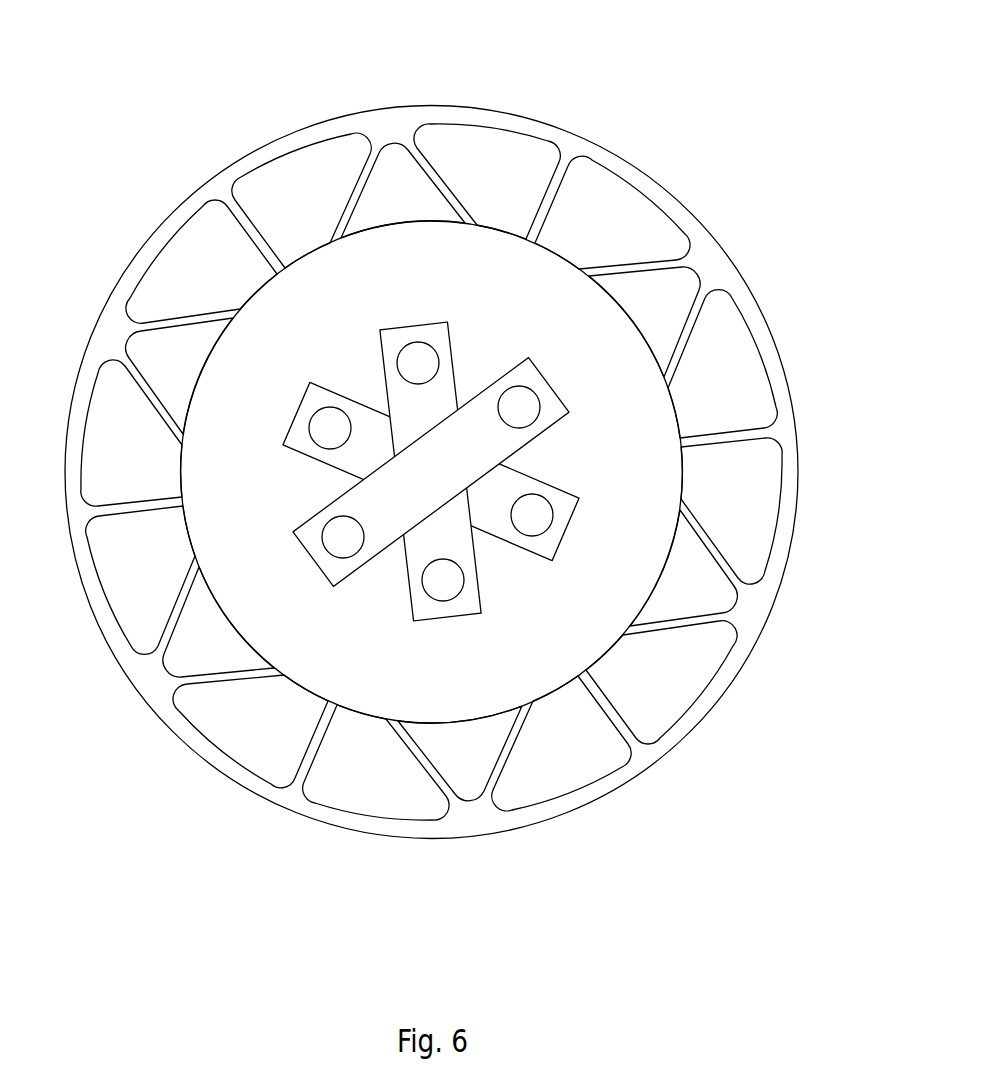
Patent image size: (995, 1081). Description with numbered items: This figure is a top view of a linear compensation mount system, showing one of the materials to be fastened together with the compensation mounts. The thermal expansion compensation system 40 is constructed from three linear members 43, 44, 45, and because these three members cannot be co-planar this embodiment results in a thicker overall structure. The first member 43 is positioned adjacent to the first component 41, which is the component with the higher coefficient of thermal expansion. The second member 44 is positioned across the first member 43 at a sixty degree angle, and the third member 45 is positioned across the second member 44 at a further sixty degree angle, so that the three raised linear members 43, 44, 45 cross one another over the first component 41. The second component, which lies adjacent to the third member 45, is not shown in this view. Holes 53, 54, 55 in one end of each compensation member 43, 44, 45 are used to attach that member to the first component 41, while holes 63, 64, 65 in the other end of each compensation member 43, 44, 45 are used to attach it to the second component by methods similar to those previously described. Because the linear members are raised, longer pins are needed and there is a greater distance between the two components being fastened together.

The thermal expansion compensation system 40 is at (248, 87).
The first component 41 is at (598, 343).
The first member 43 is at (508, 484).
The second member 44 is at (456, 538).
The third member 45 is at (419, 480).
The hole 53 is at (538, 526).
The hole 54 is at (415, 348).
The hole 55 is at (328, 548).
The hole 63 is at (315, 408).
The hole 64 is at (453, 594).
The hole 65 is at (524, 396).